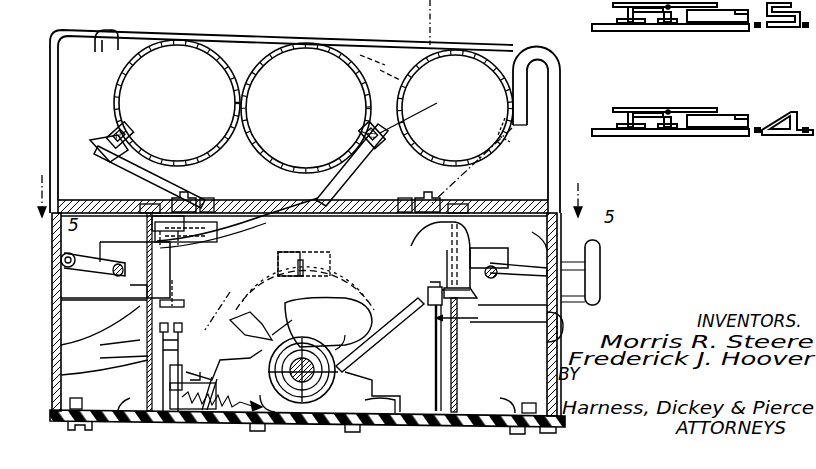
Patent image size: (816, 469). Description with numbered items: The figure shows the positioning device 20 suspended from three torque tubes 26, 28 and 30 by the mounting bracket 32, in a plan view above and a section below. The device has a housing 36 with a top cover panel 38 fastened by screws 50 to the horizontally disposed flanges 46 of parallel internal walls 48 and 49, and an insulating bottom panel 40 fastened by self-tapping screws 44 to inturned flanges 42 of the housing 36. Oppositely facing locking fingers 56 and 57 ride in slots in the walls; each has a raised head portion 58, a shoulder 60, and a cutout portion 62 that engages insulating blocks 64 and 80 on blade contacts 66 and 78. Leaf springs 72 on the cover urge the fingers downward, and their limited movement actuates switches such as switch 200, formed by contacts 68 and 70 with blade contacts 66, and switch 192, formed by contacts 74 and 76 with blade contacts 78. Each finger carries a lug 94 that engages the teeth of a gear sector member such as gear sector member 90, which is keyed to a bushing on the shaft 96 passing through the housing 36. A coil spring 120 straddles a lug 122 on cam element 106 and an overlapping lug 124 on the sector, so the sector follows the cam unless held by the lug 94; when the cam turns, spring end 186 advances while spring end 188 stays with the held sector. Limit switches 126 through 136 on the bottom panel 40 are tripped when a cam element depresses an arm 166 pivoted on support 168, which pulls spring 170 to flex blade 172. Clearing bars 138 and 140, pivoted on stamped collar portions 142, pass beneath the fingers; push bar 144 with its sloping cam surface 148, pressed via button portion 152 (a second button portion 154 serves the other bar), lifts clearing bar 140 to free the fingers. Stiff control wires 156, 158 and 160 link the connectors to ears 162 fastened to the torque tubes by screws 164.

In FIG. 5, the positioning device 20 is at (580, 322).
In FIG. 4, the torque tube 26 is at (176, 36).
In FIG. 4, the torque tube 28 is at (348, 40).
In FIG. 4, the torque tube 30 is at (538, 58).
In FIG. 4, the mounting bracket 32 is at (562, 100).
In FIG. 5, the housing 36 is at (566, 336).
In FIG. 4, the top cover panel 38 is at (552, 205).
In FIG. 5, the bottom panel 40 is at (500, 430).
In FIG. 5, the inturned flanges 42 is at (168, 348).
In FIG. 5, the self-tapping screws 44 is at (504, 408).
In FIG. 4, the horizontally disposed flanges 46 is at (215, 186).
In FIG. 5, the internal wall 48 is at (478, 340).
In FIG. 5, the internal wall 49 is at (155, 333).
In FIG. 4, the screws 50 is at (182, 198).
In FIG. 5, the locking finger 56 is at (128, 300).
In FIG. 5, the locking finger 57 is at (485, 294).
In FIG. 4, the raised head portion 58 is at (144, 206).
In FIG. 5, the shoulder 60 is at (434, 283).
In FIG. 5, the cutout portion 62 is at (440, 286).
In FIG. 5, the insulating block 64 is at (370, 342).
In FIG. 5, the blade contact 66 is at (462, 326).
In FIG. 5, the electrical contact 68 is at (434, 346).
In FIG. 5, the electrical contact 70 is at (460, 340).
In FIG. 4, the leaf spring 72 is at (262, 206).
In FIG. 5, the contact 74 is at (165, 353).
In FIG. 5, the contact 76 is at (155, 390).
In FIG. 5, the blade contact 78 is at (180, 298).
In FIG. 5, the insulating block 80 is at (232, 236).
In FIG. 5, the gear sector member 90 is at (345, 294).
In FIG. 5, the lug 94 is at (305, 268).
In FIG. 5, the shaft 96 is at (360, 372).
In FIG. 5, the cam element 106 is at (426, 294).
In FIG. 5, the coil spring 120 is at (270, 394).
In FIG. 5, the lug 122 is at (268, 330).
In FIG. 5, the lug 124 is at (345, 312).
In FIG. 5, the limit switch 126 is at (285, 426).
In FIG. 5, the limit switch 136 is at (400, 426).
In FIG. 5, the clearing bar 138 is at (600, 272).
In FIG. 5, the clearing bar 140 is at (100, 266).
In FIG. 5, the collar portion 142 is at (152, 222).
In FIG. 5, the push bar 144 is at (132, 322).
In FIG. 5, the sloping cam surface 148 is at (158, 270).
In FIG. 5, the button portion 152 is at (600, 260).
In FIG. 4, the button portion 154 is at (108, 32).
In FIG. 4, the control wire 156 is at (480, 188).
In FIG. 4, the control wire 158 is at (328, 165).
In FIG. 4, the control wire 160 is at (126, 172).
In FIG. 4, the ear 162 is at (122, 102).
In FIG. 4, the screws 164 is at (122, 128).
In FIG. 5, the arm 166 is at (170, 360).
In FIG. 5, the support 168 is at (204, 380).
In FIG. 5, the spring 170 is at (195, 424).
In FIG. 5, the blade 172 is at (238, 426).
In FIG. 5, the spring end 186 is at (258, 246).
In FIG. 5, the spring end 188 is at (250, 292).
In FIG. 5, the switch 192 is at (140, 358).
In FIG. 5, the switch 200 is at (478, 348).